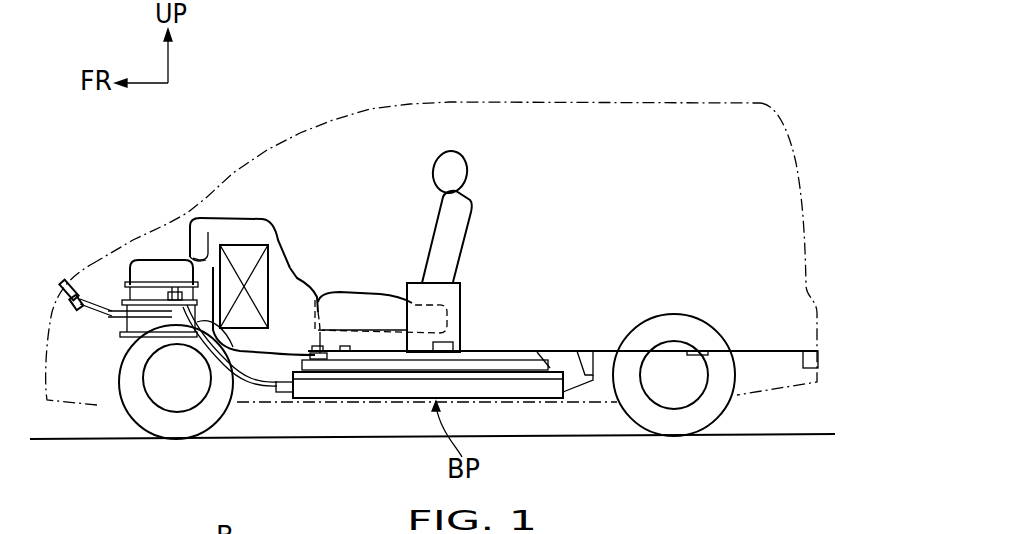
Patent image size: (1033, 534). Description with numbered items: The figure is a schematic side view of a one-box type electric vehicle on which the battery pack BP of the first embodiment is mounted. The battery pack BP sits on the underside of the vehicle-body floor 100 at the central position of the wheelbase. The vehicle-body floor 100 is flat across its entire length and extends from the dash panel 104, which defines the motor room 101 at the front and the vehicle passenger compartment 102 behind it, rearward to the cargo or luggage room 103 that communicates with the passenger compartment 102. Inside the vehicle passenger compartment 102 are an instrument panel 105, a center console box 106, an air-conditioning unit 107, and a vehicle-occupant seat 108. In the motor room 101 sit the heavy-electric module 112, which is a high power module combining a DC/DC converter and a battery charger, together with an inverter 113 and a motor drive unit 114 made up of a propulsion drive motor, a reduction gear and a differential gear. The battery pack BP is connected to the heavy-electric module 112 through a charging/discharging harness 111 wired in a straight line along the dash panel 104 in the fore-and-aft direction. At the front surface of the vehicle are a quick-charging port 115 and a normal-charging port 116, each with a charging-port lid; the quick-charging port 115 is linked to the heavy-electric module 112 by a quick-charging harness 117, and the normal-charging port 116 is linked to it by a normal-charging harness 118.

The vehicle-body floor 100 is at (553, 350).
The motor room 101 is at (100, 398).
The vehicle passenger compartment 102 is at (392, 192).
The cargo or luggage room 103 is at (670, 190).
The dash panel 104 is at (240, 245).
The instrument panel 105 is at (268, 222).
The center console box 106 is at (360, 310).
The air-conditioning unit 107 is at (267, 288).
The vehicle-occupant seat 108 is at (471, 220).
The charging/discharging harness 111 is at (233, 388).
The heavy-electric module 112 is at (147, 257).
The inverter 113 is at (160, 295).
The motor drive unit 114 is at (133, 386).
The quick-charging port 115 is at (62, 283).
The normal-charging port 116 is at (77, 311).
The quick-charging harness 117 is at (97, 300).
The normal-charging harness 118 is at (103, 318).